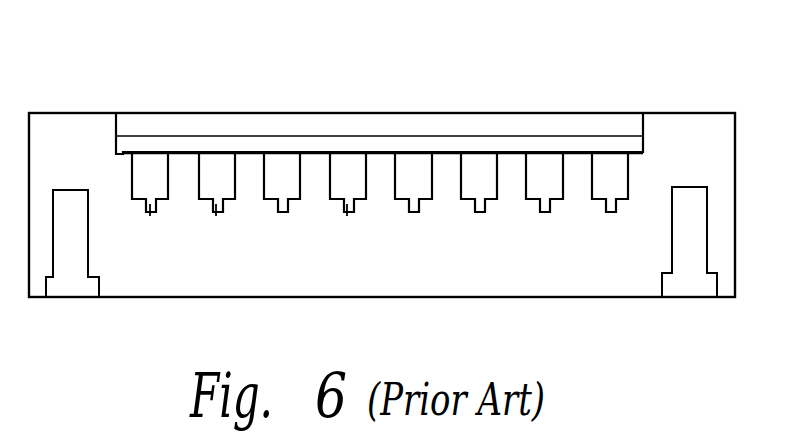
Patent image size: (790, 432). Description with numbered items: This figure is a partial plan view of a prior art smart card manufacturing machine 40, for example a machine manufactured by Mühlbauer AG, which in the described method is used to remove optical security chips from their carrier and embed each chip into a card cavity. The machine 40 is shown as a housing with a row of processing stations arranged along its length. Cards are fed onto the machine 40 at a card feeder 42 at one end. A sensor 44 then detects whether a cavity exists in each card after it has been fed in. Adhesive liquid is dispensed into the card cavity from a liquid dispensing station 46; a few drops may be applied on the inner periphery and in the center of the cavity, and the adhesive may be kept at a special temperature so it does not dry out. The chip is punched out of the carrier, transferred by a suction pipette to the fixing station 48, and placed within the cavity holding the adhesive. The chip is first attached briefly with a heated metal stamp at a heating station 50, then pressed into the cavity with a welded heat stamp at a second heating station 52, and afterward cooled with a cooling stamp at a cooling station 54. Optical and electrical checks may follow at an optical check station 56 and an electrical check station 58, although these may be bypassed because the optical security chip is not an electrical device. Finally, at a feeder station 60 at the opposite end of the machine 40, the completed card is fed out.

The smart card manufacturing machine 40 is at (138, 76).
The card feeder 42 is at (70, 262).
The sensor 44 is at (150, 216).
The liquid dispensing station 46 is at (216, 216).
The fixing station 48 is at (289, 168).
The heating station 50 is at (347, 216).
The heating station 52 is at (420, 168).
The cooling station 54 is at (482, 168).
The optical check station 56 is at (550, 168).
The electrical check station 58 is at (615, 168).
The feeder station 60 is at (686, 258).